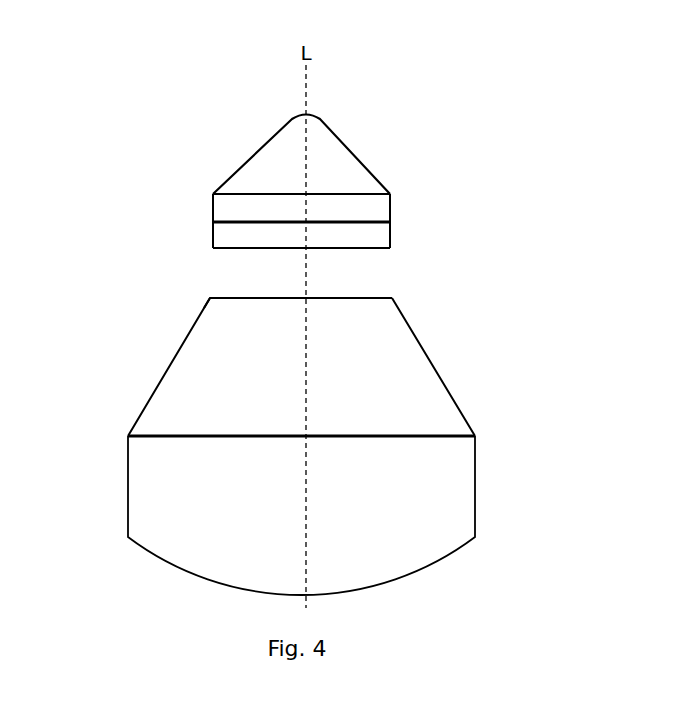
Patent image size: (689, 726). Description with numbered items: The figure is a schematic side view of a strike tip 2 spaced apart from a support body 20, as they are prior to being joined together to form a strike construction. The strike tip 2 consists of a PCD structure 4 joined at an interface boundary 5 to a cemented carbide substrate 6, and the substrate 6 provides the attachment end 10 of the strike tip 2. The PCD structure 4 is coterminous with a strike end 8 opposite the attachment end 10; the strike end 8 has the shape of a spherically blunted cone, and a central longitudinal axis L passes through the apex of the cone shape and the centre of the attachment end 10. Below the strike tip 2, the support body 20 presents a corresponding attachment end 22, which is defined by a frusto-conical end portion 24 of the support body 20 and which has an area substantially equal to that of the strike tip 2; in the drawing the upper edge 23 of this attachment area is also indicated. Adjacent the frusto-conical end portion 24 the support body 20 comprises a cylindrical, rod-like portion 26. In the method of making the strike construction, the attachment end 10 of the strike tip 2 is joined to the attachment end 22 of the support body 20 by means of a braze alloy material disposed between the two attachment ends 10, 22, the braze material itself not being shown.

The strike tip 2 is at (367, 135).
The PCD structure 4 is at (272, 180).
The interface boundary 5 is at (391, 222).
The cemented carbide substrate 6 is at (273, 238).
The strike end 8 is at (275, 133).
The attachment end 10 is at (367, 251).
The support body 20 is at (472, 355).
The attachment end 22 is at (248, 298).
The top edge 23 is at (210, 298).
The frusto-conical end portion 24 is at (171, 363).
The cylindrical, rod-like portion 26 is at (160, 491).